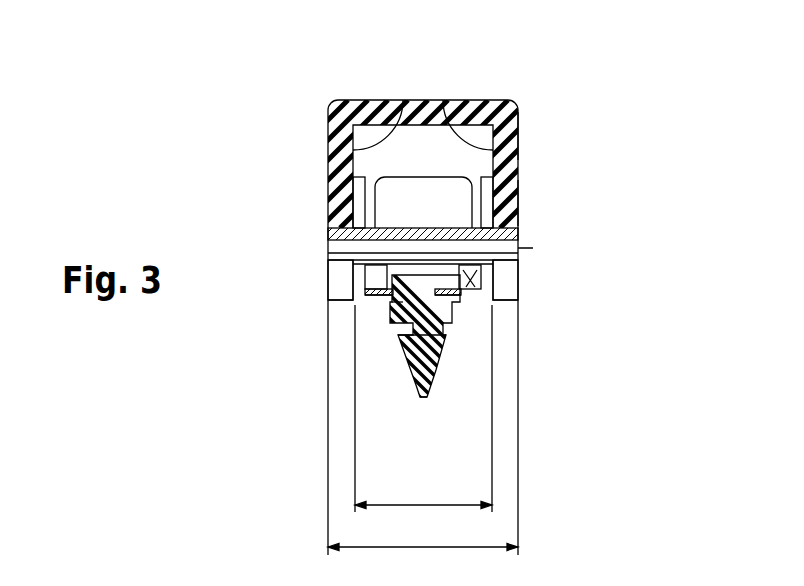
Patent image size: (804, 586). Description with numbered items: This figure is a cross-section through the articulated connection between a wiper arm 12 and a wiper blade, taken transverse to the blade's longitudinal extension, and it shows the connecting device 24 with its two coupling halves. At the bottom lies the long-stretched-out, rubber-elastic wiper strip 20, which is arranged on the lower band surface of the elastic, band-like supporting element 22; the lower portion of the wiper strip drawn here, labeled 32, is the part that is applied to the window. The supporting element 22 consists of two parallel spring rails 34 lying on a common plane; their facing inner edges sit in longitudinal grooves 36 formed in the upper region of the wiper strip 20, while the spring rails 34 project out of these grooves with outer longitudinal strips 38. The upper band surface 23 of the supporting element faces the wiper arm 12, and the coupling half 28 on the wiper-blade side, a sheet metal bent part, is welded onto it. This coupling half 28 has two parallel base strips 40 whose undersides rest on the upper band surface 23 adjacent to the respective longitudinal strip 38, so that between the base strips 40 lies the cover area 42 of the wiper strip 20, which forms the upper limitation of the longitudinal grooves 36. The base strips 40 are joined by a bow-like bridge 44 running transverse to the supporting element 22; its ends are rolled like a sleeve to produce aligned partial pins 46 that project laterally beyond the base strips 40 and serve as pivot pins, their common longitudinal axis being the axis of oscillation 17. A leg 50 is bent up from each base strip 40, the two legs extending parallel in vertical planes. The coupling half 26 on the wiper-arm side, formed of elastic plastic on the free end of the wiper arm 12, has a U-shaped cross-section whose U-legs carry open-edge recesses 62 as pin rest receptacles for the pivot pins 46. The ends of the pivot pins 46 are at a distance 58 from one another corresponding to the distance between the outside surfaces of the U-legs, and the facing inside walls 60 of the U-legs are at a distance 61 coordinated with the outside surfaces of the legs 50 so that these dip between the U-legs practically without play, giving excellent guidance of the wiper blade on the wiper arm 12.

The wiper arm 12 is at (502, 87).
The inside walls of the U-legs 60 is at (447, 107).
The first coupling half on the wiper-arm side 26 is at (524, 129).
The connecting device 24 is at (525, 202).
The legs 50 is at (359, 183).
The bow-like bridge 44 is at (423, 210).
The partial pins (pivot pins) 46 is at (335, 232).
The axis of oscillation 17 is at (334, 247).
The open-edge recesses 62 is at (513, 268).
The cover area 42 is at (387, 271).
The second coupling half on the wiper-blade side 28 is at (354, 283).
The base strips 40 is at (480, 282).
The upper band surface 23 is at (494, 270).
The outer longitudinal strips 38 is at (372, 294).
The spring rails 34 is at (378, 300).
The longitudinal grooves 36 is at (375, 315).
The supporting element 22 is at (462, 298).
The wiper strip 20 is at (394, 343).
The pin tip 32 is at (422, 397).
The distance between inside walls 61 is at (423, 408).
The distance between pivot pin ends 58 is at (423, 427).